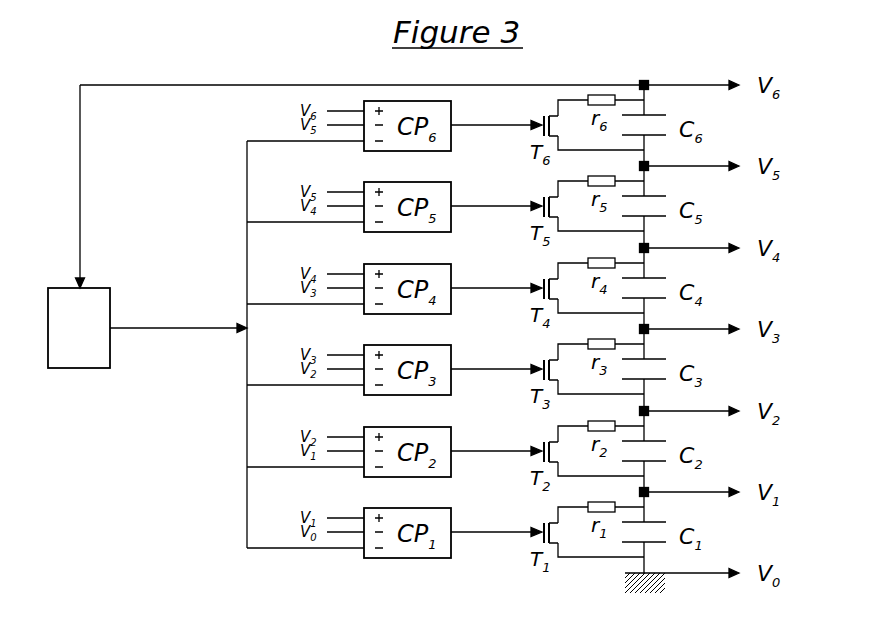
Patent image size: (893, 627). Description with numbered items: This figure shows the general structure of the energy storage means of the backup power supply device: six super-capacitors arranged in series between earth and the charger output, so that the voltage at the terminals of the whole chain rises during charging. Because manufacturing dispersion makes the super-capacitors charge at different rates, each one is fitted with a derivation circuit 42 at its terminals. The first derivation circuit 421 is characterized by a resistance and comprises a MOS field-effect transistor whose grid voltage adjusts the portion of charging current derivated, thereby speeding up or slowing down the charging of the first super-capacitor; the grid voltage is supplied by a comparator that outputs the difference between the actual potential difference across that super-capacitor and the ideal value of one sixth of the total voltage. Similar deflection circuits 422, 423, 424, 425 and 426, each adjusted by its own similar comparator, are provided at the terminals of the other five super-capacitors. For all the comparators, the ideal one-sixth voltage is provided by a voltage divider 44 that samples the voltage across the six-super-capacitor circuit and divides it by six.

The derivation circuit 42 is at (520, 317).
The sixth derivation circuit 426 is at (550, 107).
The fifth derivation circuit 425 is at (550, 188).
The fourth derivation circuit 424 is at (550, 270).
The third derivation circuit 423 is at (550, 351).
The second derivation circuit 422 is at (550, 433).
The first derivation circuit 421 is at (550, 514).
The voltage divider 44 is at (147, 328).